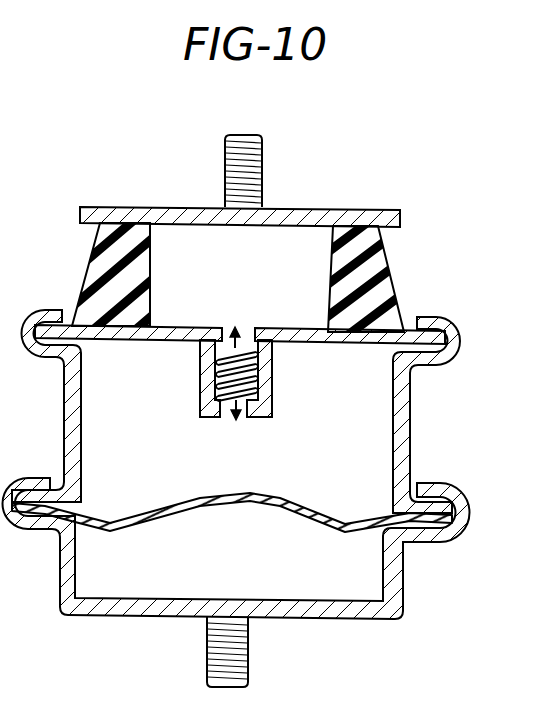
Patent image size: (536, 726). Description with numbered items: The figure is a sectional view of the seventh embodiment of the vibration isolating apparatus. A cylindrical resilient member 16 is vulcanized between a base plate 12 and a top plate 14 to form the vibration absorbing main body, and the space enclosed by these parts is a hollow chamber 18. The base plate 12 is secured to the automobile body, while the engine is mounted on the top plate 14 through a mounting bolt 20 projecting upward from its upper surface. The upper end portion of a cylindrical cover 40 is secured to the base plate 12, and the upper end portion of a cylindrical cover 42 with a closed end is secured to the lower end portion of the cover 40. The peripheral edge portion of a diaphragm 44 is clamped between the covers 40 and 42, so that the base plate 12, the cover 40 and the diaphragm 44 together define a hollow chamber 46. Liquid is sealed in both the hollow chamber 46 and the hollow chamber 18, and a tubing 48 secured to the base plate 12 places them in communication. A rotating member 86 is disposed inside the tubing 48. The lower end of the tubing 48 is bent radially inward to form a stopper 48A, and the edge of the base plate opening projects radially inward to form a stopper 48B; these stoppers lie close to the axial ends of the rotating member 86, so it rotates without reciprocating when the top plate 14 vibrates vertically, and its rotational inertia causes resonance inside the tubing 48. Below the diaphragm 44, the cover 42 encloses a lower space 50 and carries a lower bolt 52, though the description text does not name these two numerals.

The base plate 12 is at (118, 345).
The top plate 14 is at (346, 210).
The cylindrical resilient member 16 is at (385, 262).
The hollow chamber 18 is at (237, 282).
The mounting bolt 20 is at (263, 160).
The cylindrical cover 40 is at (412, 407).
The cylindrical cover with a closed end 42 is at (404, 585).
The diaphragm 44 is at (256, 512).
The hollow chamber 46 is at (218, 479).
The tubing 48 is at (273, 380).
The stopper 48A is at (238, 418).
The stopper 48B is at (238, 328).
The expansion chamber 50 is at (207, 571).
The lower mounting bolt 52 is at (249, 652).
The rotating member 86 is at (214, 386).